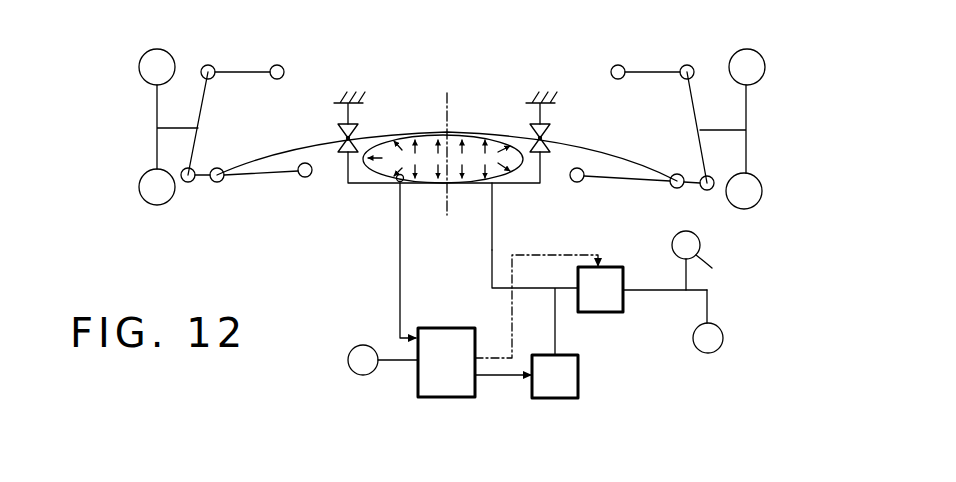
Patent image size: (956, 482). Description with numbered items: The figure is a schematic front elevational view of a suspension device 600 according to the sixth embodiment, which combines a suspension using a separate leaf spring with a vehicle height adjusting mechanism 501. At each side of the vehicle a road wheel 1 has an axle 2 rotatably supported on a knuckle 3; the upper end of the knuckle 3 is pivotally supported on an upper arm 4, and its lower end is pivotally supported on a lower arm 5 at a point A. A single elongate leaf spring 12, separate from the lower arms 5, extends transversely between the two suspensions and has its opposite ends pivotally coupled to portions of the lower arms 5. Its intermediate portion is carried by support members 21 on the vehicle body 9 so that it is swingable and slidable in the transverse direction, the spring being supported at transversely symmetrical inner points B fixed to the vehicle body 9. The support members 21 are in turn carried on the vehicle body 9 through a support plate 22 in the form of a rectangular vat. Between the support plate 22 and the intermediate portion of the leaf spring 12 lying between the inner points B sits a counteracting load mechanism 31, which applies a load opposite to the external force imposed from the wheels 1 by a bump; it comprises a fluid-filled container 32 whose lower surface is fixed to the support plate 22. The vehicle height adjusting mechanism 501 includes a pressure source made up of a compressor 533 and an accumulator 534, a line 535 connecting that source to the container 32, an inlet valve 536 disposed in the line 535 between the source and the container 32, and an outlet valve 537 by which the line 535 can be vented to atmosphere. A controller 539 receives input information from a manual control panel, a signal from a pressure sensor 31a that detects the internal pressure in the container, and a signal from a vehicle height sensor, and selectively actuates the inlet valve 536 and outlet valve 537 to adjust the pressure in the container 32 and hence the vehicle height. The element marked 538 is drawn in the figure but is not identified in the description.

The road wheel 1 is at (146, 55).
The axle 2 is at (183, 127).
The knuckle 3 is at (204, 95).
The upper arm 4 is at (250, 65).
The lower arm 5 is at (265, 178).
The vehicle body 9 is at (346, 98).
The leaf spring 12 is at (516, 133).
The support member 21 is at (347, 165).
The support plate 22 is at (369, 186).
The counteracting load mechanism 31 is at (428, 150).
The pressure sensor 31a is at (403, 183).
The container 32 is at (511, 186).
The vehicle height adjusting mechanism 501 is at (375, 297).
The compressor 533 is at (716, 349).
The accumulator 534 is at (700, 243).
The line 535 is at (490, 248).
The inlet valve 536 is at (612, 313).
The outlet valve 537 is at (557, 399).
The current source 538 is at (355, 372).
The controller 539 is at (443, 398).
The suspension device 600 is at (300, 255).
The point A is at (217, 183).
The inner point B is at (444, 122).